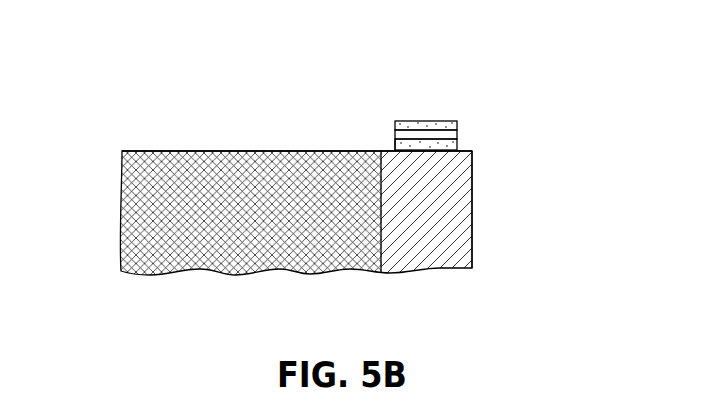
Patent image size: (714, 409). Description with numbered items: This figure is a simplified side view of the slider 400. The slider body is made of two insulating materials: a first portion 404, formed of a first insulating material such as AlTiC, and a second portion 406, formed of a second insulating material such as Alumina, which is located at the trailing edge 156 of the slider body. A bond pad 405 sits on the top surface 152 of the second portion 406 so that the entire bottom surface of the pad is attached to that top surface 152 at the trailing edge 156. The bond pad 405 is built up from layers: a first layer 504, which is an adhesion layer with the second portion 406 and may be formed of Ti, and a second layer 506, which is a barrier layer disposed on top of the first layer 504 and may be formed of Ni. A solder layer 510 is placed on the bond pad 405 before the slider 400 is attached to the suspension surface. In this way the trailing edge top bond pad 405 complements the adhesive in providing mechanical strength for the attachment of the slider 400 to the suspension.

The slider 400 is at (150, 56).
The top surface 152 is at (189, 142).
The first portion 404 is at (287, 151).
The slider bond pad 405 is at (394, 145).
The second portion 406 is at (395, 247).
The trailing edge 156 is at (488, 205).
The first layer 504 is at (457, 146).
The second layer 506 is at (457, 133).
The solder layer 510 is at (445, 121).